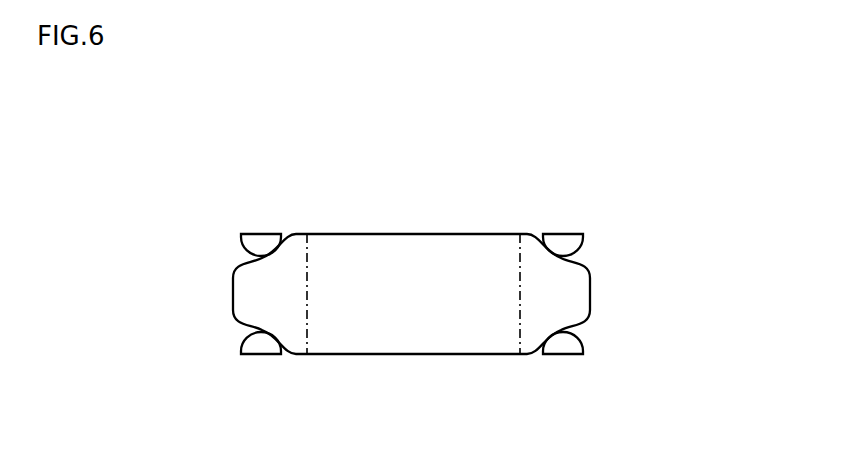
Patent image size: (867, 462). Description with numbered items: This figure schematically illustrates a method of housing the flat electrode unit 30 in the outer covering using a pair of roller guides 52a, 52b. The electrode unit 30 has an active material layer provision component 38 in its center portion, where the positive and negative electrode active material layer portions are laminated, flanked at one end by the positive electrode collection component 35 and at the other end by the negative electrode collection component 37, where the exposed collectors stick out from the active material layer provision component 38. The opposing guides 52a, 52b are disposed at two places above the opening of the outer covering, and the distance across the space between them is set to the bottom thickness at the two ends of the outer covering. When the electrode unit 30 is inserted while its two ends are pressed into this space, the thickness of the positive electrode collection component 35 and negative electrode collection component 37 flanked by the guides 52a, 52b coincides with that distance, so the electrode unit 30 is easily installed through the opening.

The electrode unit 30 is at (424, 242).
The active material layer provision component 38 is at (487, 235).
The negative electrode collection component 37 is at (255, 295).
The positive electrode collection component 35 is at (568, 307).
The guide 52a is at (268, 233).
The guide 52b is at (262, 355).